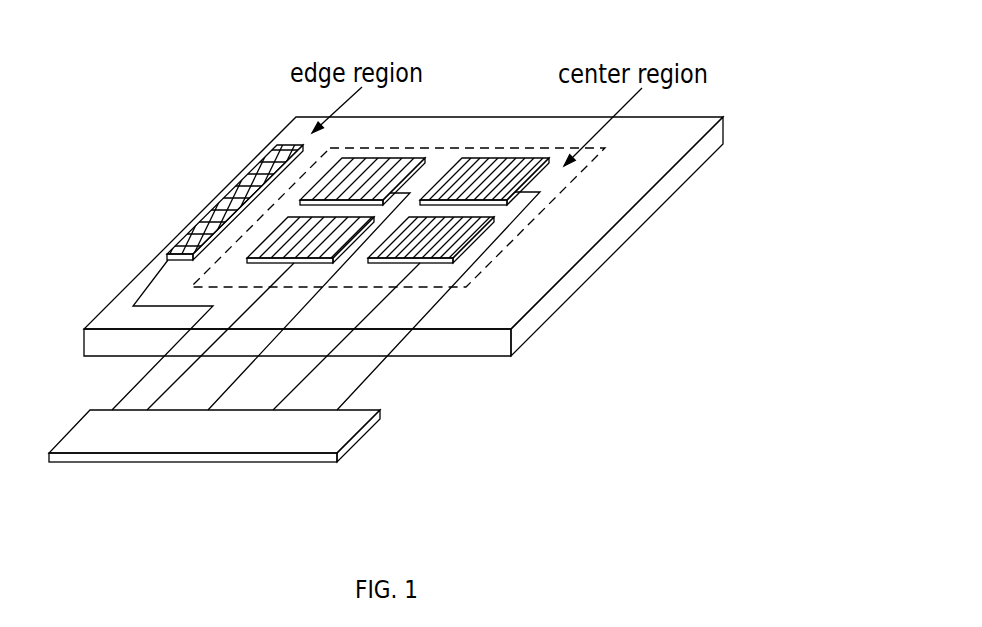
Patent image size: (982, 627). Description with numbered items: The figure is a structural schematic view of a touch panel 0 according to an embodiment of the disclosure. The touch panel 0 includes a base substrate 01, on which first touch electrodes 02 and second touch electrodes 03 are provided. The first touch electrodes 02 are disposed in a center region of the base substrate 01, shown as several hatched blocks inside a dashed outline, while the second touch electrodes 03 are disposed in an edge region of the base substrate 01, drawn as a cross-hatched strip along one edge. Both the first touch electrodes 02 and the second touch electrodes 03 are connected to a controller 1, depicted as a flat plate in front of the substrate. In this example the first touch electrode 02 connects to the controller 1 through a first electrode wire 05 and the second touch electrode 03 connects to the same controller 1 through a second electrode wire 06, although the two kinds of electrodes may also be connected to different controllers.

The touch panel 0 is at (507, 21).
The base substrate 01 is at (610, 242).
The first touch electrodes 02 is at (499, 170).
The second touch electrodes 03 is at (226, 198).
The first electrode wire 05 is at (375, 372).
The second electrode wire 06 is at (115, 402).
The controller 1 is at (313, 445).